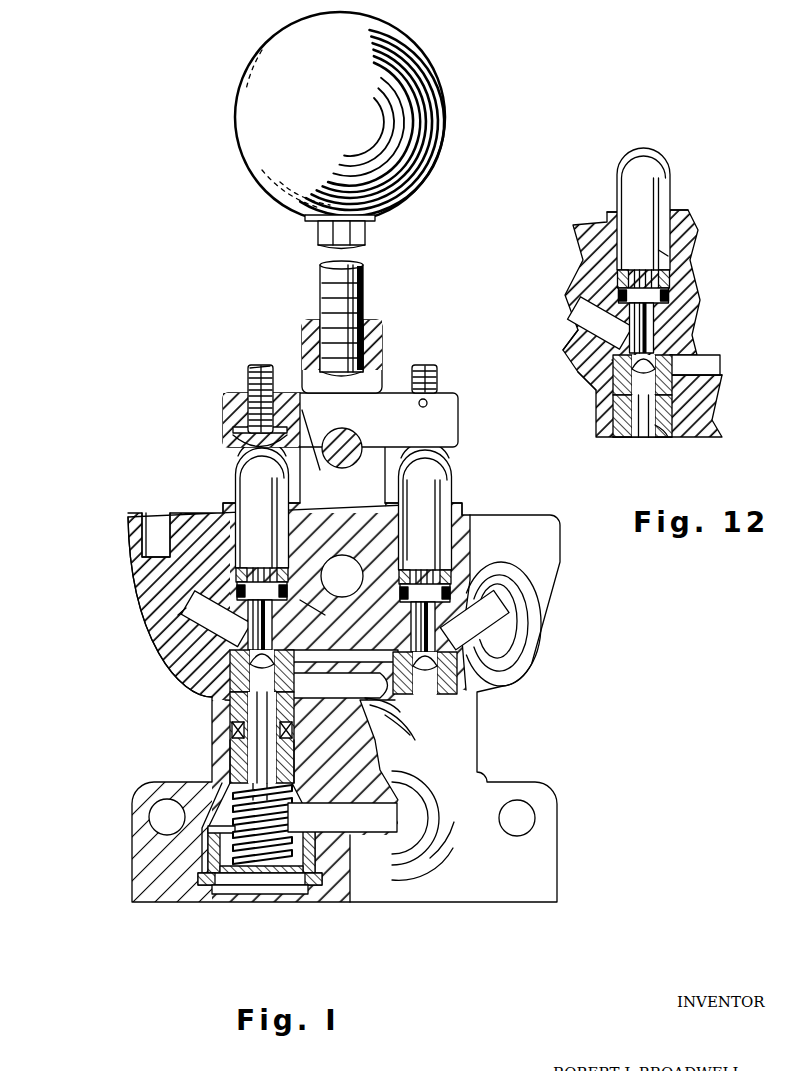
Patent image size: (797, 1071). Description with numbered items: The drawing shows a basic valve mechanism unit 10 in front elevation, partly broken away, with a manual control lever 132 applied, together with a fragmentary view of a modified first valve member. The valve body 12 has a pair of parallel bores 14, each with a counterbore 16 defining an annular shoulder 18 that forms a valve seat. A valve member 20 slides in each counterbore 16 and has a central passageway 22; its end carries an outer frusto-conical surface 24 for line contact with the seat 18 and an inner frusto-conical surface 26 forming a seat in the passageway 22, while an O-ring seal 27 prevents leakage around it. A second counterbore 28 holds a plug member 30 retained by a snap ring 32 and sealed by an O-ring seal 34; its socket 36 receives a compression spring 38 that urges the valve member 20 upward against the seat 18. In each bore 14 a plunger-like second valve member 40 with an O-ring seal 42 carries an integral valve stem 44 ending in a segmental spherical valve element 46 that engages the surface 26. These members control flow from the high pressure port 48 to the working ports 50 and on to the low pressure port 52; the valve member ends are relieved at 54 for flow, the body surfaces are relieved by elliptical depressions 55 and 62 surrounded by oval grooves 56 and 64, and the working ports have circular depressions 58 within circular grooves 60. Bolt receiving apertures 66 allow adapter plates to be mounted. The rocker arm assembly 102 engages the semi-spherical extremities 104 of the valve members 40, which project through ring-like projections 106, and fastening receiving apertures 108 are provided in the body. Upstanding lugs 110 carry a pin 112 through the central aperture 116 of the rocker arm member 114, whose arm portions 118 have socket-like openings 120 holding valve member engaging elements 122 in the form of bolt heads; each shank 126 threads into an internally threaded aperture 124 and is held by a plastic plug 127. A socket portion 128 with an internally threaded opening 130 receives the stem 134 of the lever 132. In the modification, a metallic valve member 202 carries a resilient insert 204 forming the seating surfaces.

In FIG. 1, the valve mechanism unit 10 is at (525, 464).
In FIG. 12, the valve mechanism unit 10 is at (593, 210).
In FIG. 1, the valve body 12 is at (545, 552).
In FIG. 12, the valve body 12 is at (688, 290).
In FIG. 1, the bores 14 is at (325, 616).
In FIG. 12, the bores 14 is at (664, 258).
In FIG. 1, the counterbore 16 is at (240, 762).
In FIG. 12, the counterbore 16 is at (615, 418).
In FIG. 1, the annular shoulder 18 is at (465, 665).
In FIG. 12, the annular shoulder 18 is at (600, 348).
In FIG. 1, the valve member 20 is at (458, 688).
In FIG. 1, the central port or passageway 22 is at (392, 690).
In FIG. 12, the central port or passageway 22 is at (668, 436).
In FIG. 1, the outer frusto-conical surface 24 is at (300, 660).
In FIG. 12, the outer frusto-conical surface 24 is at (695, 368).
In FIG. 1, the inner frusto-conical surface 26 is at (343, 673).
In FIG. 12, the inner frusto-conical surface 26 is at (642, 382).
In FIG. 1, the O-ring seal 27 is at (232, 738).
In FIG. 1, the second counterbore 28 is at (308, 886).
In FIG. 1, the plug member 30 is at (220, 875).
In FIG. 1, the snap ring 32 is at (212, 890).
In FIG. 1, the O-ring seal 34 is at (210, 829).
In FIG. 1, the socket 36 is at (262, 868).
In FIG. 1, the compression spring 38 is at (342, 817).
In FIG. 1, the second valve member 40 is at (440, 486).
In FIG. 12, the second valve member 40 is at (655, 188).
In FIG. 1, the O-ring seal 42 is at (485, 550).
In FIG. 12, the O-ring seal 42 is at (620, 278).
In FIG. 1, the valve stem 44 is at (345, 619).
In FIG. 12, the valve stem 44 is at (645, 338).
In FIG. 1, the segmental spherical valve element 46 is at (440, 650).
In FIG. 12, the segmental spherical valve element 46 is at (662, 360).
In FIG. 1, the high pressure port 48 is at (380, 708).
In FIG. 12, the high pressure port 48 is at (716, 390).
In FIG. 1, the working port 50 is at (182, 616).
In FIG. 12, the working port 50 is at (580, 318).
In FIG. 1, the low pressure port 52 is at (400, 820).
In FIG. 1, the relieved periphery 54 is at (232, 700).
In FIG. 12, the relieved periphery 54 is at (612, 386).
In FIG. 1, the elliptical depression 55 is at (398, 702).
In FIG. 1, the annular groove 56 is at (408, 718).
In FIG. 1, the circular depression 58 is at (498, 643).
In FIG. 1, the annular groove 60 is at (515, 674).
In FIG. 1, the elliptical depression 62 is at (395, 878).
In FIG. 1, the annular groove 64 is at (445, 855).
In FIG. 1, the bolt receiving apertures 66 is at (537, 816).
In FIG. 1, the rocker arm assembly 102 is at (393, 342).
In FIG. 1, the semi-spherical extremity 104 is at (452, 458).
In FIG. 1, the ring-like projection 106 is at (460, 506).
In FIG. 12, the ring-like projection 106 is at (676, 214).
In FIG. 1, the fastening receiving apertures 108 is at (142, 518).
In FIG. 1, the upstanding lugs 110 is at (395, 470).
In FIG. 1, the pin 112 is at (358, 436).
In FIG. 1, the rocker arm member 114 is at (308, 372).
In FIG. 1, the central aperture 116 is at (336, 436).
In FIG. 1, the arm portions 118 is at (458, 410).
In FIG. 1, the socket-like opening 120 is at (233, 432).
In FIG. 1, the valve member engaging element 122 is at (237, 428).
In FIG. 1, the internally threaded aperture 124 is at (256, 387).
In FIG. 1, the shank 126 is at (437, 370).
In FIG. 1, the plastic plug 127 is at (427, 402).
In FIG. 1, the socket portion 128 is at (376, 332).
In FIG. 1, the internally threaded opening 130 is at (322, 312).
In FIG. 1, the manual control lever 132 is at (440, 152).
In FIG. 1, the stem 134 is at (362, 272).
In FIG. 12, the metallic valve member 202 is at (622, 440).
In FIG. 12, the insert 204 is at (622, 364).